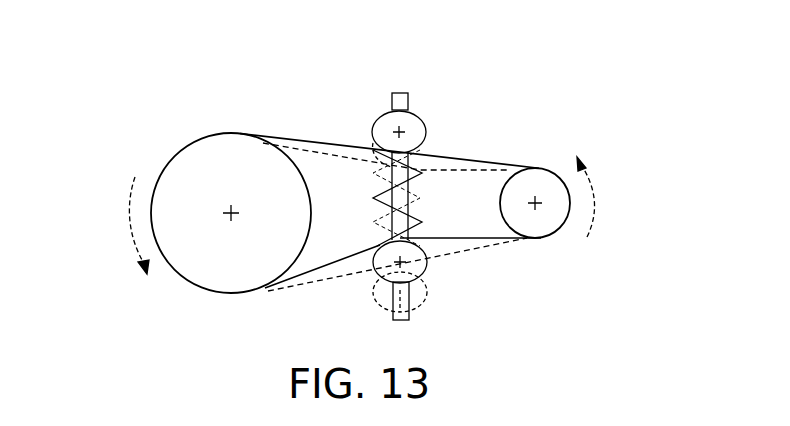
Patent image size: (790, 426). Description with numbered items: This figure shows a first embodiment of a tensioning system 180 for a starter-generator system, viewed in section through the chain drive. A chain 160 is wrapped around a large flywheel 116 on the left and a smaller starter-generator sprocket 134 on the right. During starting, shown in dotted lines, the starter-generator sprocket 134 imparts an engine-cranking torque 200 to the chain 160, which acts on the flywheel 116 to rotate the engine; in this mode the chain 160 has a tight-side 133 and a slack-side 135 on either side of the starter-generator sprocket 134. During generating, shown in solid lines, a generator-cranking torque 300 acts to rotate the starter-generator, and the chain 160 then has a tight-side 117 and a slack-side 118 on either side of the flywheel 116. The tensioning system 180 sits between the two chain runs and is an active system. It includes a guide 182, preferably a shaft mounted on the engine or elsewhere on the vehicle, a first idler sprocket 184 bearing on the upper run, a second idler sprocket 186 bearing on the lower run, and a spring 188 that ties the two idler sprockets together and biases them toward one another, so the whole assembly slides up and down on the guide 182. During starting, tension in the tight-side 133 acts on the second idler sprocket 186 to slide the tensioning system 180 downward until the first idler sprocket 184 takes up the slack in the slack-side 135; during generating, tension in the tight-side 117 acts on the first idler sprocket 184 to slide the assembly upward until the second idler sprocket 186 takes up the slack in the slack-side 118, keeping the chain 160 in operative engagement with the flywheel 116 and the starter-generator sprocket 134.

The flywheel 116 is at (193, 165).
The tight-side 117 is at (276, 134).
The slack-side 118 is at (340, 262).
The chain 160 is at (336, 146).
The tensioning system 180 is at (404, 69).
The guide 182 is at (412, 92).
The first idler sprocket 184 is at (383, 113).
The second idler sprocket 186 is at (423, 260).
The spring 188 is at (417, 223).
The slack-side 135 is at (484, 170).
The tight-side 133 is at (500, 247).
The starter-generator sprocket 134 is at (548, 217).
The engine-cranking torque 200 is at (600, 208).
The generator-cranking torque 300 is at (128, 215).